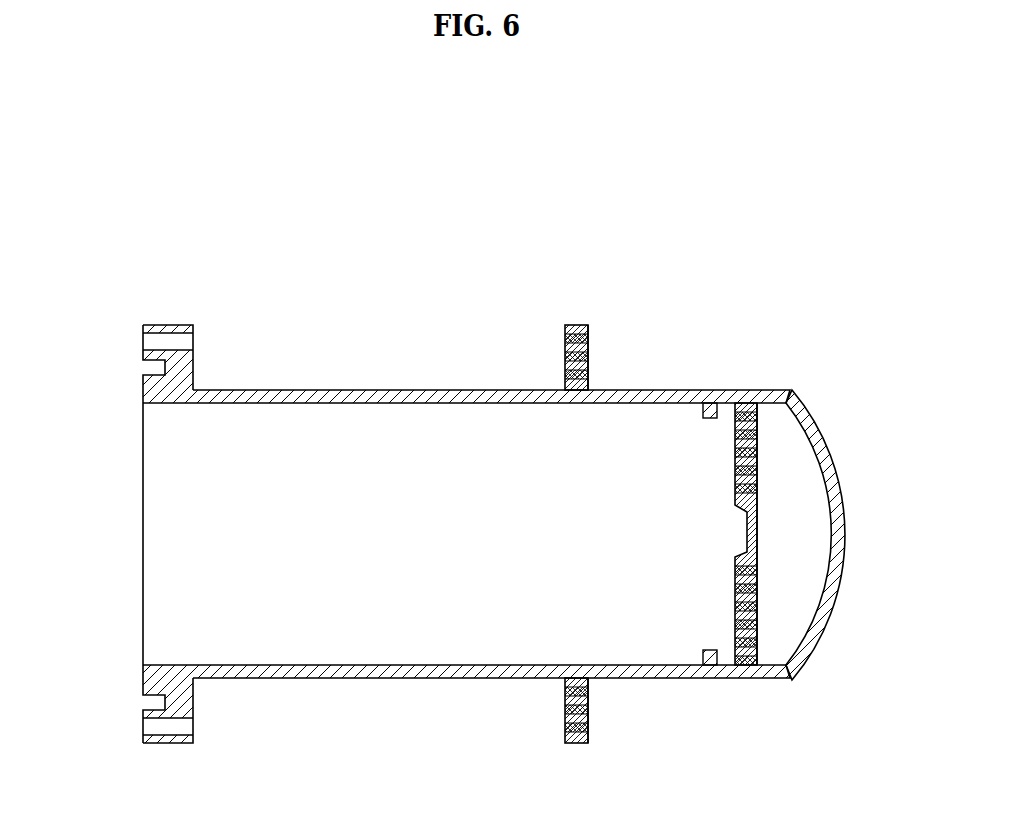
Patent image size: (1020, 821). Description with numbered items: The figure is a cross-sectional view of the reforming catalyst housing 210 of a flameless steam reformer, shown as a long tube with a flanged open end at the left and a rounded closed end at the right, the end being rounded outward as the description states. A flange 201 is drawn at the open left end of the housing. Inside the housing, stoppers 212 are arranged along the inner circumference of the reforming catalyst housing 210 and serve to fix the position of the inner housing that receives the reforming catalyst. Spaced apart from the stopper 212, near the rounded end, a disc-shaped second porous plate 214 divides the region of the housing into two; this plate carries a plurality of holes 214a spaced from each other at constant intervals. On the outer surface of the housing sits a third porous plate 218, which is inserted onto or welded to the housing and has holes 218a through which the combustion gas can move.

The reforming catalyst housing 210 is at (752, 213).
The flange 201 is at (150, 367).
The stoppers 212 is at (702, 668).
The second porous plate 214 is at (766, 430).
The holes 214a is at (759, 452).
The third porous plate 218 is at (596, 319).
The holes 218a is at (589, 370).